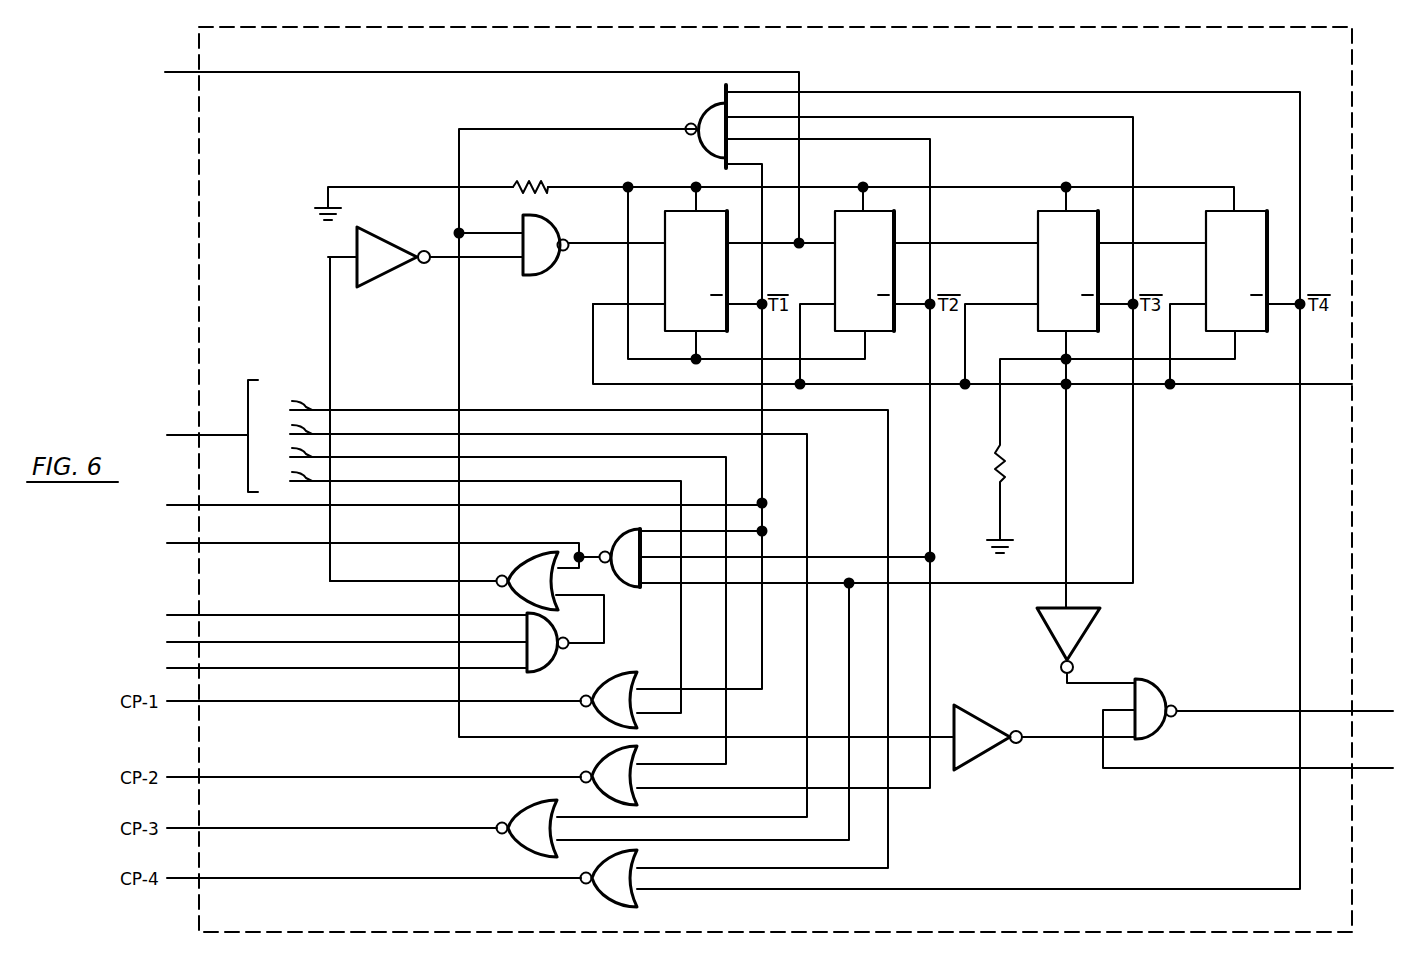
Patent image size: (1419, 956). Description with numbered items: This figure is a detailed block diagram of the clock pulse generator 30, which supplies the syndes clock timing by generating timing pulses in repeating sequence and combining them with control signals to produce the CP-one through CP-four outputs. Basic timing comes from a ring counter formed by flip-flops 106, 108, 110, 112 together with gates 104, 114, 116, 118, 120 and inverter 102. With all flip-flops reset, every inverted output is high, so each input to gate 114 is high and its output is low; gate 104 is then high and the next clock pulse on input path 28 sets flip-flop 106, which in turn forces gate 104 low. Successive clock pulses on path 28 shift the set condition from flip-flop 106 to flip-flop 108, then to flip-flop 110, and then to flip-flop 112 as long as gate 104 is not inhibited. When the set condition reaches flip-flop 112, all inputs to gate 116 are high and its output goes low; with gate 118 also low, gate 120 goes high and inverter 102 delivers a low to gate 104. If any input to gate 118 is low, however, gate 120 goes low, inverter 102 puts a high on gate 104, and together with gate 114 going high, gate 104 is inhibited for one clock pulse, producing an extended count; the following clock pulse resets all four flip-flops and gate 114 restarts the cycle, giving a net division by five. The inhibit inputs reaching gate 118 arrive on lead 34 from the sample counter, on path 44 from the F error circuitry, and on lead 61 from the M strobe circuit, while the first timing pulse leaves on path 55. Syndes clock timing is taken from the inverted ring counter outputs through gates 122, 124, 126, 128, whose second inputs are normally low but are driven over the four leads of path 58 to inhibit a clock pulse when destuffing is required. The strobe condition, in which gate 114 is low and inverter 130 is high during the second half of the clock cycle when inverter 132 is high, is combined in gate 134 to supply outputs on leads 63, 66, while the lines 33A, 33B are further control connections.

The clock pulse generator 30 is at (258, 143).
The T1 timing signal path 55 is at (198, 72).
The clock input path 28 is at (999, 344).
The destuff control path 58 is at (200, 435).
The control input line 33A is at (200, 543).
The control input line 33B is at (200, 505).
The inhibit lead 34 is at (200, 615).
The F error path 44 is at (200, 642).
The M error lead 61 is at (200, 668).
The output lead 63 is at (1358, 711).
The output lead 66 is at (1358, 768).
The inverter 102 is at (372, 232).
The gate 104 is at (520, 226).
The flip-flop 106 is at (680, 211).
The flip-flop 108 is at (850, 211).
The flip-flop 110 is at (1053, 211).
The flip-flop 112 is at (1221, 211).
The gate 114 is at (716, 105).
The gate 116 is at (630, 540).
The gate 118 is at (548, 663).
The gate 120 is at (524, 568).
The clock output gate 122 is at (604, 722).
The clock output gate 124 is at (604, 749).
The clock output gate 126 is at (525, 802).
The clock output gate 128 is at (600, 903).
The inverter 130 is at (976, 763).
The inverter 132 is at (1045, 635).
The gate 134 is at (1146, 683).